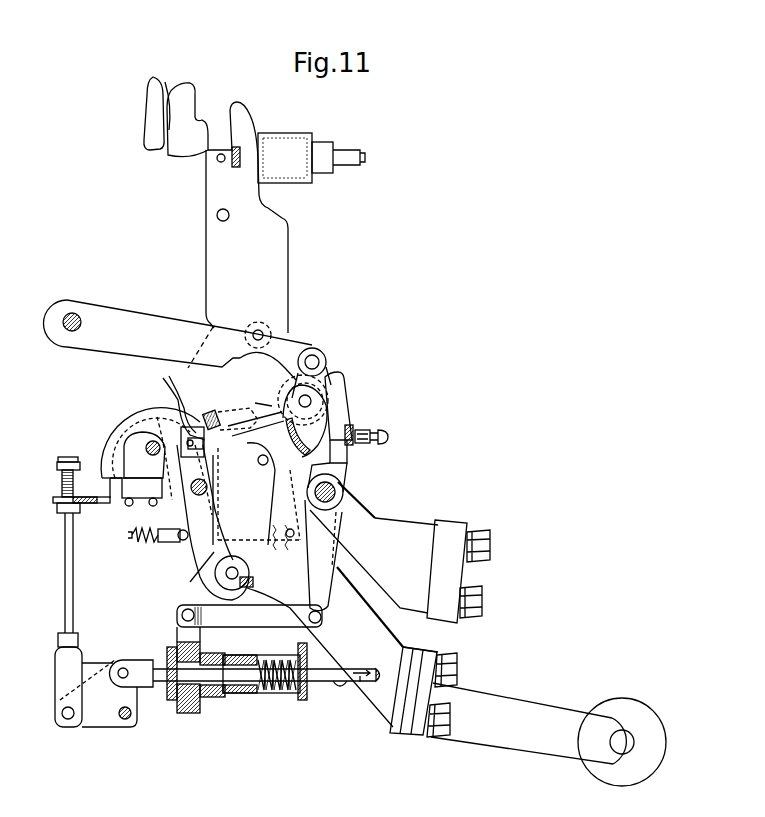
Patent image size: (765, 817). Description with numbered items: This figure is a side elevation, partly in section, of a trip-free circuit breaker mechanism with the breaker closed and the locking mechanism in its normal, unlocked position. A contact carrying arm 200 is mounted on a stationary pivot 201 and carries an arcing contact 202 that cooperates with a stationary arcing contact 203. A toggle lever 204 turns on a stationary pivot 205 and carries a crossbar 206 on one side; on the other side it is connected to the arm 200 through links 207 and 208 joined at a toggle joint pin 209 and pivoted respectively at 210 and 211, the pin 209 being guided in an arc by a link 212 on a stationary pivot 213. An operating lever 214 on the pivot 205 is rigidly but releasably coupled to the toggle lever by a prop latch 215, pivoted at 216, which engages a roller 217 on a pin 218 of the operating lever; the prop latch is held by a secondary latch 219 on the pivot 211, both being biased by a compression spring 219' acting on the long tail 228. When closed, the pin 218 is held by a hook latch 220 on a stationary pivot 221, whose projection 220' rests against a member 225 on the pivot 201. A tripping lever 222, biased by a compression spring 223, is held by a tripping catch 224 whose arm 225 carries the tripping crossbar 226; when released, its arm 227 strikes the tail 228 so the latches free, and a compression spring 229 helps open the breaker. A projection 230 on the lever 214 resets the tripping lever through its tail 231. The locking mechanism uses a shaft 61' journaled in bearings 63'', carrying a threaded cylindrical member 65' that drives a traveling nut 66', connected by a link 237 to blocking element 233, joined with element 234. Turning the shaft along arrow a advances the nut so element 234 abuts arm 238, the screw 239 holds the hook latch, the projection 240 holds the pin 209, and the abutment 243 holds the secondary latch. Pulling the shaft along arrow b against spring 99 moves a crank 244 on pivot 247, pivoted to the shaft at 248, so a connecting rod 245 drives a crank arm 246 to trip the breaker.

The contact carrying arm 200 is at (276, 235).
The stationary pivot 201 is at (146, 447).
The arcing contact 202 is at (173, 156).
The stationary arcing contact 203 is at (163, 90).
The toggle lever 204 is at (374, 547).
The stationary pivot 205 is at (336, 491).
The crossbar 206 is at (458, 571).
The link 207 is at (297, 340).
The link 208 is at (331, 372).
The toggle joint pin 209 is at (316, 360).
The pivot 210 is at (259, 331).
The pivot 211 is at (312, 401).
The link 212 is at (145, 333).
The stationary pivot 213 is at (64, 323).
The operating lever 214 is at (456, 676).
The prop latch 215 is at (284, 510).
The pivot 216 is at (267, 464).
The roller 217 is at (247, 568).
The pin 218 is at (252, 583).
The secondary latch 219 is at (278, 416).
The compression spring 219' is at (248, 403).
The hook latch 220 is at (203, 522).
The projection 220' is at (157, 450).
The stationary pivot 221 is at (192, 492).
The tripping lever 222 is at (177, 400).
The compression spring 223 is at (147, 541).
The tripping catch 224 is at (178, 425).
The arm 225 is at (144, 455).
The tripping crossbar 226 is at (142, 492).
The arm 227 is at (184, 541).
The long tail 228 is at (244, 494).
The compression spring 229 is at (289, 550).
The projection 230 is at (332, 461).
The tail 231 is at (190, 576).
The blocking member element 233 is at (325, 603).
The blocking member element 234 is at (228, 388).
The link 237 is at (268, 627).
The arm 238 is at (117, 428).
The screw 239 is at (207, 416).
The projection 240 is at (341, 382).
The adjustable abutment 243 is at (380, 445).
The crank 244 is at (92, 729).
The connecting rod 245 is at (64, 598).
The crank arm 246 is at (97, 504).
The stationary pivot 247 is at (126, 721).
The pivot 248 is at (121, 668).
The rotatable shaft 61' is at (266, 702).
The bearings 63'' is at (225, 692).
The threaded cylindrical member 65' is at (216, 694).
The traveling nut 66' is at (186, 697).
The spring 99 is at (273, 693).
The arrow a is at (338, 688).
The arrow b is at (360, 683).